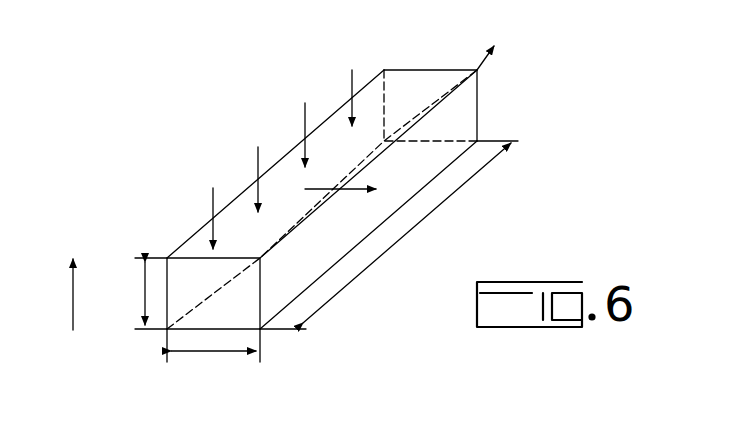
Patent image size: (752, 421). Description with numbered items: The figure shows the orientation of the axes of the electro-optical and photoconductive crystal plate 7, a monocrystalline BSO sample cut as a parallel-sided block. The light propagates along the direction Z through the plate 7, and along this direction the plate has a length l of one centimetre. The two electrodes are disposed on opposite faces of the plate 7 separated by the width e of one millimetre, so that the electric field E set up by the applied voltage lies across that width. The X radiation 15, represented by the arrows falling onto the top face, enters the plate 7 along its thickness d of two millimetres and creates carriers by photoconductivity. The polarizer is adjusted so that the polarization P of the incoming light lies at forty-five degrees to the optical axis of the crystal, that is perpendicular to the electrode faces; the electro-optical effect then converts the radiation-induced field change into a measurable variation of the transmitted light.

The plate 7 is at (366, 102).
The X radiation 15 is at (213, 212).
The direction of propagation of the light Z is at (338, 177).
The polarization of the light P is at (58, 294).
The electric field direction E is at (340, 177).
The width between the electrodes e is at (145, 293).
The thickness in the direction of the X radiation d is at (213, 356).
The length in the direction of propagation of the light l is at (389, 235).